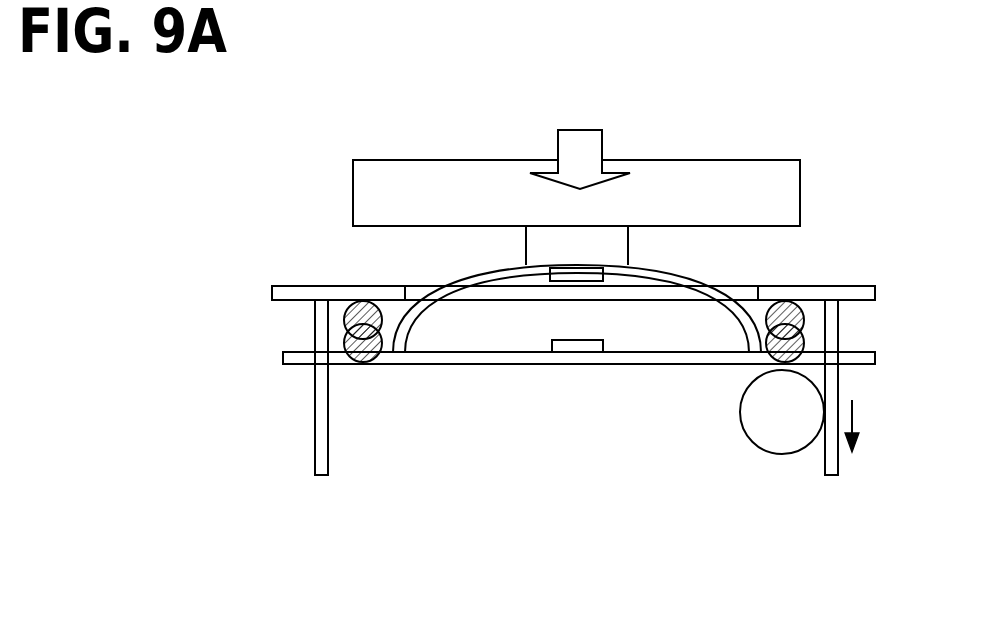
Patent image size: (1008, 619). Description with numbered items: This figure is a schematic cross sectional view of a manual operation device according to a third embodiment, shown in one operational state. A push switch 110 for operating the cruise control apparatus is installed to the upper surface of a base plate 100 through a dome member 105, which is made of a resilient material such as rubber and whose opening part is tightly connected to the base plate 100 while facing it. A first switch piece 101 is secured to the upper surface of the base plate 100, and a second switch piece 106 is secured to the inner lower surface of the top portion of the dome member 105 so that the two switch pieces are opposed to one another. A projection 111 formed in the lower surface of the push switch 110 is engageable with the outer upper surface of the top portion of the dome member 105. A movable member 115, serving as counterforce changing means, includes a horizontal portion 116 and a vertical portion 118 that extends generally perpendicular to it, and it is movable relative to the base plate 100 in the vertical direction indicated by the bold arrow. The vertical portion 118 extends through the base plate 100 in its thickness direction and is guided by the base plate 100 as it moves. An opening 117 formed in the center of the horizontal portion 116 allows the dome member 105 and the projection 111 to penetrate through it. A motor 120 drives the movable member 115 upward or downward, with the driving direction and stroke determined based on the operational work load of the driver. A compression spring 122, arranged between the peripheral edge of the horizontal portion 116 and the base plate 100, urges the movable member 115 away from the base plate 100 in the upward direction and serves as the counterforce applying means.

The base plate 100 is at (665, 358).
The first switch piece 101 is at (594, 336).
The dome member 105 is at (655, 275).
The second switch piece 106 is at (552, 290).
The push switch 110 is at (663, 173).
The projection 111 is at (539, 240).
The movable member 115 is at (836, 262).
The horizontal portion 116 is at (786, 292).
The opening 117 is at (452, 295).
The vertical portion 118 is at (838, 323).
The motor 120 is at (758, 430).
The compression spring 122 is at (340, 318).